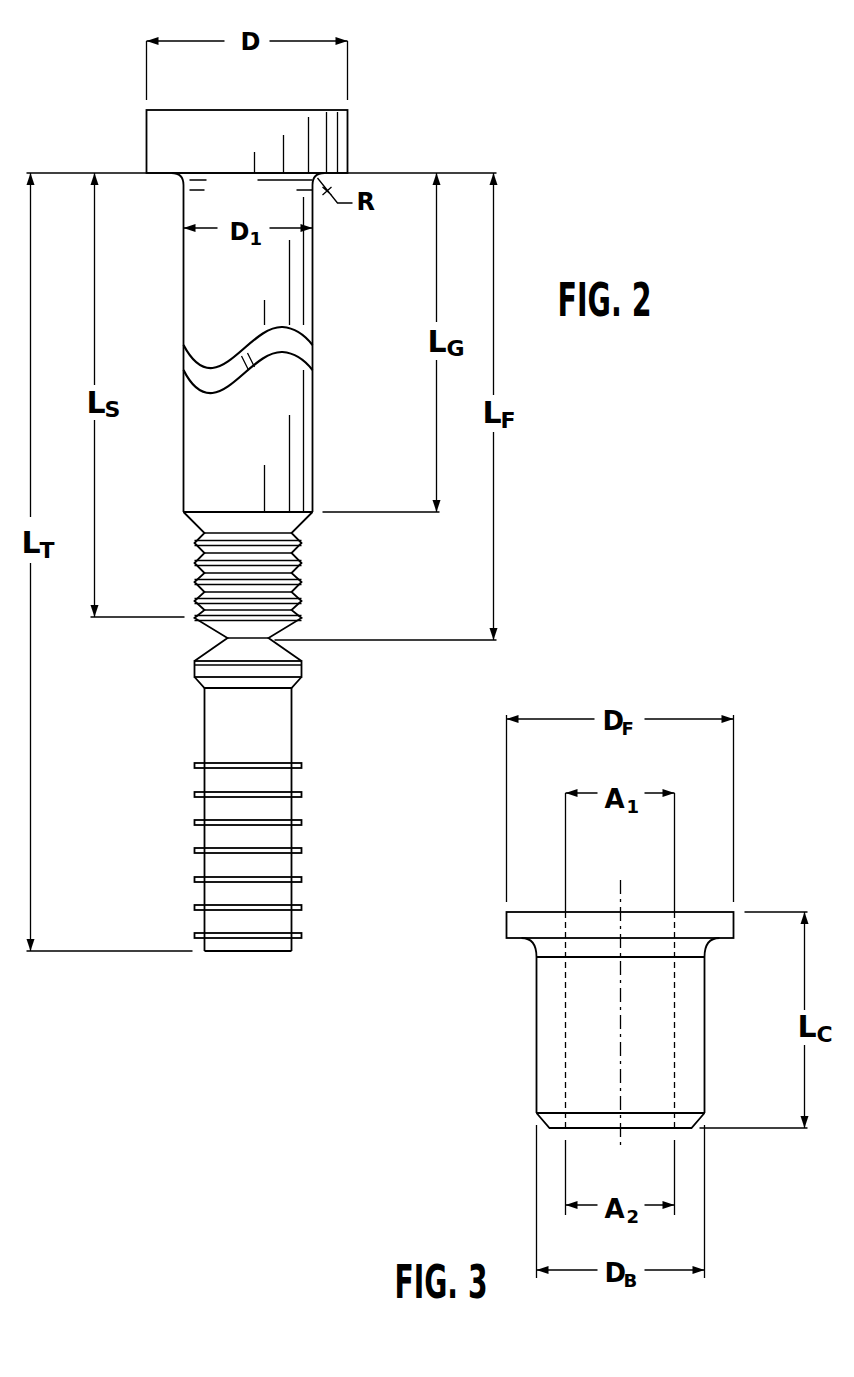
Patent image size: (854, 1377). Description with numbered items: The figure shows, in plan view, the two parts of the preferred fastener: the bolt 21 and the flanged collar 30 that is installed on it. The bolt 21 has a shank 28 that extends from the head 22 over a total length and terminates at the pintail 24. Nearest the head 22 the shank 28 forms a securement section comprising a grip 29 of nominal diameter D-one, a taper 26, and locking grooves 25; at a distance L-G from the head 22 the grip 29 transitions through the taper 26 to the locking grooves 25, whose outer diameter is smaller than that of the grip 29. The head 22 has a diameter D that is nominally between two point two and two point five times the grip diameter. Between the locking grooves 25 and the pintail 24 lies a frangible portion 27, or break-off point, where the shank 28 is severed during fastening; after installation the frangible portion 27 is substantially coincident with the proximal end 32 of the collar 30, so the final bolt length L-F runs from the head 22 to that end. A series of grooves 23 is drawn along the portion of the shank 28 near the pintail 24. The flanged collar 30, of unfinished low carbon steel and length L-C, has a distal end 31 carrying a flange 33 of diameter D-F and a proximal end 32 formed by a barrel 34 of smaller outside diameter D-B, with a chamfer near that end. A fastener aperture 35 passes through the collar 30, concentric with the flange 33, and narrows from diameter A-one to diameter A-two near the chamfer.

In FIG. 2, the bolt 21 is at (262, 570).
In FIG. 2, the head 22 is at (332, 155).
In FIG. 2, the lock grooves 23 is at (278, 837).
In FIG. 2, the pintail 24 is at (230, 952).
In FIG. 2, the locking grooves 25 is at (302, 588).
In FIG. 2, the taper 26 is at (308, 517).
In FIG. 2, the frangible portion 27 is at (277, 641).
In FIG. 2, the shank 28 is at (175, 415).
In FIG. 2, the grip 29 is at (298, 437).
In FIG. 3, the flanged collar 30 is at (621, 1042).
In FIG. 3, the distal end 31 is at (710, 898).
In FIG. 3, the proximal end 32 is at (578, 1138).
In FIG. 3, the flange 33 is at (520, 923).
In FIG. 3, the barrel 34 is at (705, 1083).
In FIG. 3, the fastener aperture 35 is at (677, 1003).